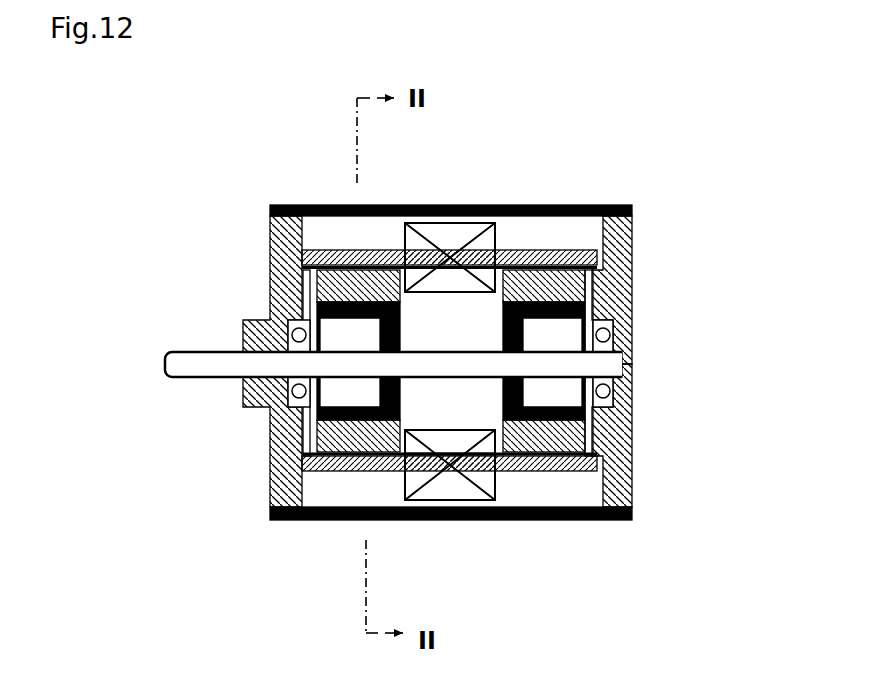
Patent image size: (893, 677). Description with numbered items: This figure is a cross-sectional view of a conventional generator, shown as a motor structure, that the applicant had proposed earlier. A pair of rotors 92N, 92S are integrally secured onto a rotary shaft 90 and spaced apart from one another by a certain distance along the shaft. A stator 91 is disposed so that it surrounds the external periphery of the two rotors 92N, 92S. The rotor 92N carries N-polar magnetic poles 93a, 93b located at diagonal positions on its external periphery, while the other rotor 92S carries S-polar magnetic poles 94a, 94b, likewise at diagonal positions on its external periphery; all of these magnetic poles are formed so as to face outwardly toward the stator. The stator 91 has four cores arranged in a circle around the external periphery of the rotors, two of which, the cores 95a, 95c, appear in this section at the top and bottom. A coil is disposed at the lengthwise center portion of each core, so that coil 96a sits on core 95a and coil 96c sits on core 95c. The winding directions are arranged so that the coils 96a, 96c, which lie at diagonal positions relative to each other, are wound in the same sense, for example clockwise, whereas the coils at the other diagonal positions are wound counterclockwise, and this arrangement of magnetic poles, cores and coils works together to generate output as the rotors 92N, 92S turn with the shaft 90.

The rotary shaft 90 is at (180, 351).
The stator 91 is at (568, 234).
The rotor 92N is at (318, 416).
The rotor 92S is at (632, 422).
The N-polar magnetic pole 93a is at (327, 252).
The N-polar magnetic pole 93b is at (350, 454).
The S-polar magnetic pole 94a is at (530, 250).
The S-polar magnetic pole 94b is at (545, 472).
The core 95a is at (632, 247).
The core 95c is at (632, 462).
The coil 96a is at (437, 223).
The coil 96c is at (453, 500).